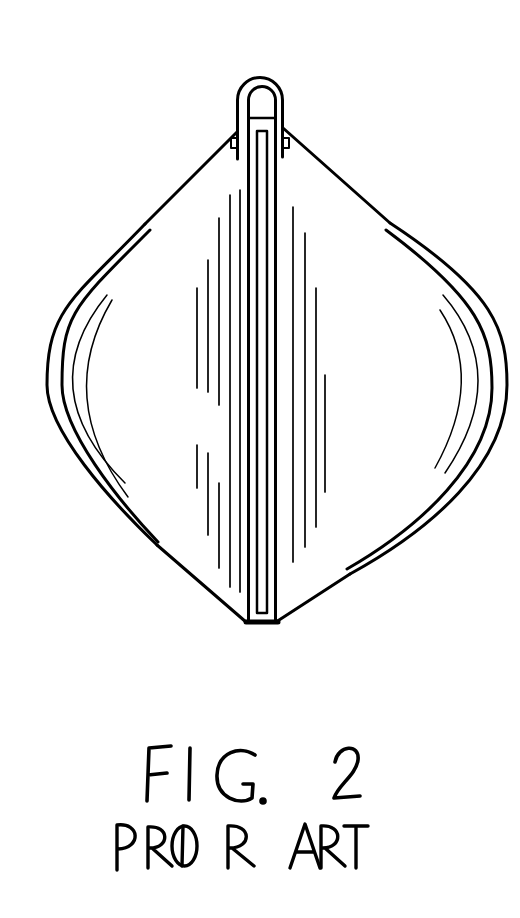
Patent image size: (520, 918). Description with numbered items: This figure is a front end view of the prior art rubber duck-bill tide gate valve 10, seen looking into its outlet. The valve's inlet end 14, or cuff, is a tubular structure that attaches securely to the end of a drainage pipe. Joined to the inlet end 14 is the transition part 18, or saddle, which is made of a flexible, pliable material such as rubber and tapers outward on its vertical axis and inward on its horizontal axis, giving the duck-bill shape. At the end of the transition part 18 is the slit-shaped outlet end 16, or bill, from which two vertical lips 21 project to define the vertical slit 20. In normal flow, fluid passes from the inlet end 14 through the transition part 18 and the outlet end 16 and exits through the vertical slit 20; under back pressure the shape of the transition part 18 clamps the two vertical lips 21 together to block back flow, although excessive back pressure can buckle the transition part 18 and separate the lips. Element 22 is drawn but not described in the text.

The tide gate valve 10 is at (406, 205).
The inlet end 14 is at (157, 548).
The outlet end 16 is at (278, 625).
The transition part 18 is at (205, 549).
The vertical slit 20 is at (265, 195).
The vertical lips 21 is at (248, 376).
The cap 22 is at (242, 99).